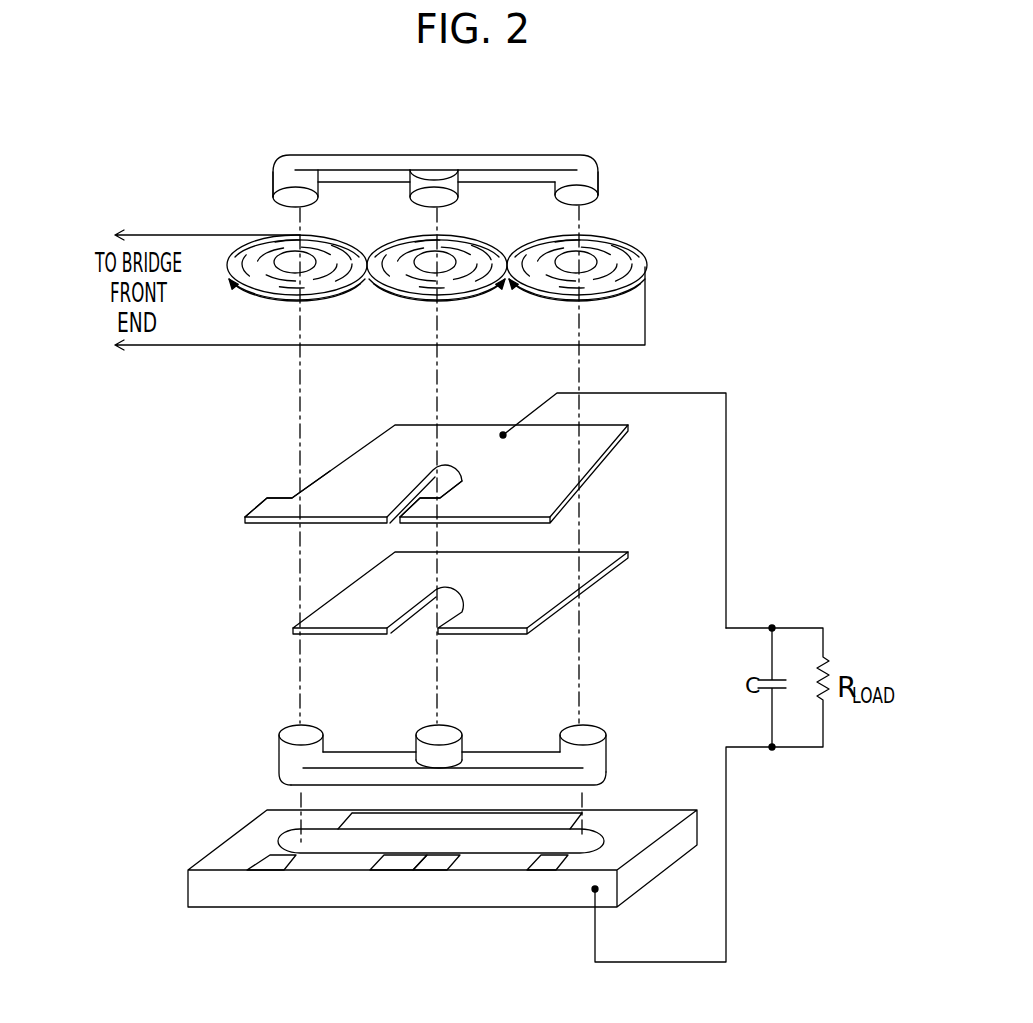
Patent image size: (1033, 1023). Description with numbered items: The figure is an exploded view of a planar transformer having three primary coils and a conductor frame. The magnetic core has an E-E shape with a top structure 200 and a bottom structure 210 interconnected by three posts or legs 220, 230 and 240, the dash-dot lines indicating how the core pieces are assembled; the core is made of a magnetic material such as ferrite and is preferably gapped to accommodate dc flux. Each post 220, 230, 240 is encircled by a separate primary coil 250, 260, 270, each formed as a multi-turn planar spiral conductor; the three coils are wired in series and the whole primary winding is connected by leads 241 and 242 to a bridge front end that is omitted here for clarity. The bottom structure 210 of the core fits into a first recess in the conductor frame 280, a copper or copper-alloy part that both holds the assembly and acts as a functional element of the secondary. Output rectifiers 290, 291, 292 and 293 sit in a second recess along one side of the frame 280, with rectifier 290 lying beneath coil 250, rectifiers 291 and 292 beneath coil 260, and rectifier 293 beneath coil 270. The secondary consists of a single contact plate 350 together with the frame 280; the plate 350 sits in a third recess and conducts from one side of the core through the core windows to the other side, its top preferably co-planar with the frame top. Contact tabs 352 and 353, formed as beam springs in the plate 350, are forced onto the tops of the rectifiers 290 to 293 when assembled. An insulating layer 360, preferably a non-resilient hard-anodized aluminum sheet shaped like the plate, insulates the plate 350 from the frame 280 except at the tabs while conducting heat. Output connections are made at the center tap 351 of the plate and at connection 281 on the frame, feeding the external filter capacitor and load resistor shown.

The top structure 200 is at (495, 162).
The bottom structure 210 is at (495, 757).
The core post 220 is at (307, 199).
The core post 230 is at (445, 199).
The core post 240 is at (588, 198).
The lead 241 is at (142, 233).
The lead 242 is at (150, 347).
The primary coil 250 is at (333, 279).
The primary coil 260 is at (480, 279).
The primary coil 270 is at (642, 258).
The conductor frame 280 is at (230, 853).
The connection on the conductor frame 281 is at (595, 889).
The output rectifier 290 is at (270, 867).
The output rectifier 291 is at (382, 867).
The output rectifier 292 is at (440, 867).
The output rectifier 293 is at (543, 868).
The contact plate 350 is at (592, 442).
The center tap 351 is at (503, 435).
The contact tab 352 is at (320, 505).
The contact tab 353 is at (510, 507).
The insulating layer 360 is at (592, 570).